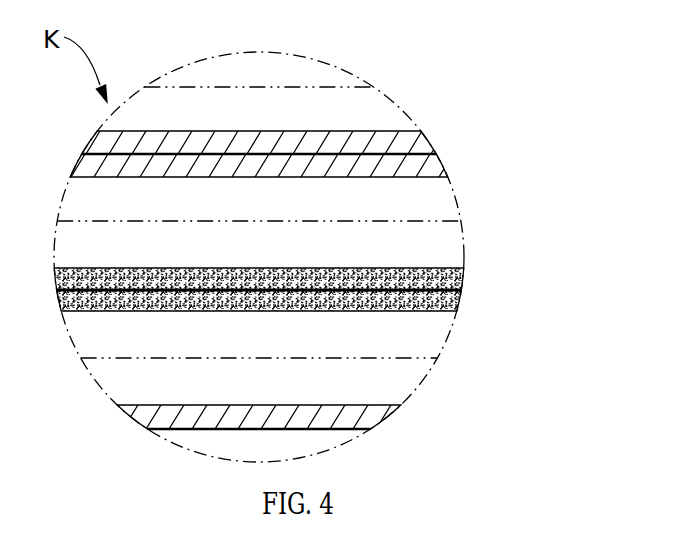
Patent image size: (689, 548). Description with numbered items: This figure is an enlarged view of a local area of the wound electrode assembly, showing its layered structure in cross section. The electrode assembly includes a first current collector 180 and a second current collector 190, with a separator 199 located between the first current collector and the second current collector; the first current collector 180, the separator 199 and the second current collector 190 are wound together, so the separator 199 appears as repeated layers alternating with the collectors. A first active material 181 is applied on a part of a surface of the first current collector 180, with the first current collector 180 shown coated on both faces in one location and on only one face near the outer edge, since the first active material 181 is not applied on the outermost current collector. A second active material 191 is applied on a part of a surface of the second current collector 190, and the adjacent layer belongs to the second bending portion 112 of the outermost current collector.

The second bending portion 112 is at (459, 307).
The first current collector 180 is at (437, 154).
The first active material 181 is at (423, 131).
The second current collector 190 is at (462, 290).
The second active material 191 is at (462, 272).
The separator 199 is at (362, 86).